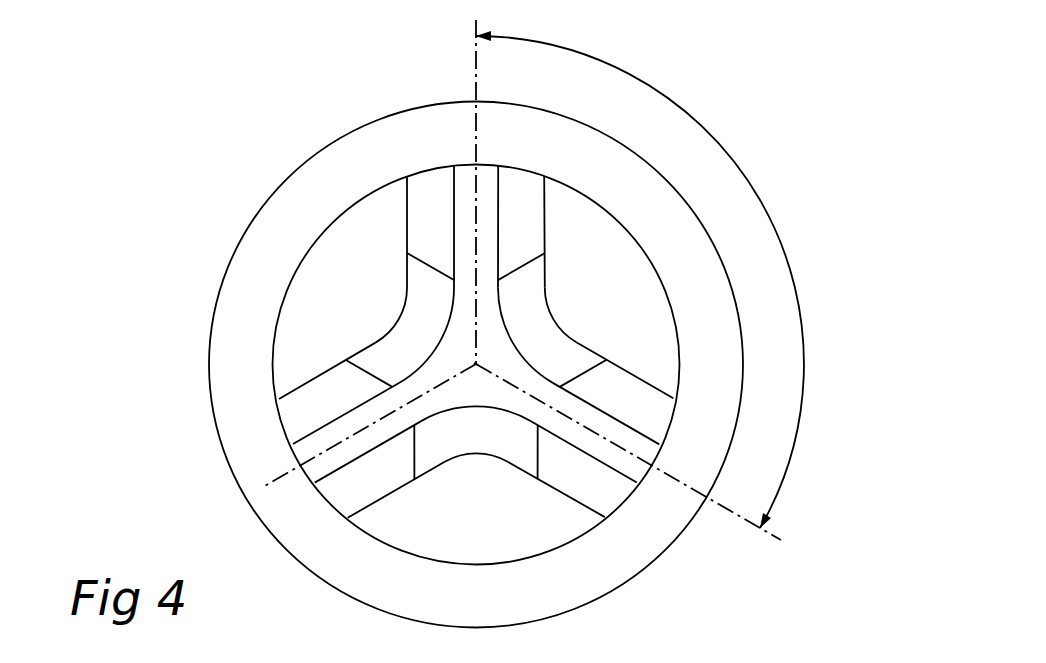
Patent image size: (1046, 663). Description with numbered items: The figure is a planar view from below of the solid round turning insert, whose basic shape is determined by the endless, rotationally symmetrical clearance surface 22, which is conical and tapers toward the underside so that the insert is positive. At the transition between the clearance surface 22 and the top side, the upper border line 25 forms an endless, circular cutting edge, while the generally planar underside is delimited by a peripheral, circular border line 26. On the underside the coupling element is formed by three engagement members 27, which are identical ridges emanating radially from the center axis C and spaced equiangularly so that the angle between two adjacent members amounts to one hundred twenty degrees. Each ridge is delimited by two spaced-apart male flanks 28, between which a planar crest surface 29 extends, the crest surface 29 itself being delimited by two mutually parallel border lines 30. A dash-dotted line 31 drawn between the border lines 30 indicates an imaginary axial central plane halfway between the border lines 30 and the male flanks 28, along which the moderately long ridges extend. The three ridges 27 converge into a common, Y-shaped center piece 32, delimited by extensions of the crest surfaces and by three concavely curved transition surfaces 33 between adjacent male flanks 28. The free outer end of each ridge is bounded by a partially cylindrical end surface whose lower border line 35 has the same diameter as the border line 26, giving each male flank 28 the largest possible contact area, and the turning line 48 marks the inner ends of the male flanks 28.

The rotationally symmetrical surface 22 is at (446, 365).
The upper border line 25 is at (237, 244).
The circular border line 26 is at (325, 228).
The engagement members 27 is at (452, 141).
The male flanks 28 is at (650, 387).
The crest surface 29 is at (640, 446).
The border lines 30 is at (640, 428).
The central plane 31 is at (572, 413).
The center piece 32 is at (440, 350).
The transition surfaces 33 is at (385, 343).
The lower border line 35 is at (479, 159).
The turning line 48 is at (590, 366).
The center axis C is at (470, 360).